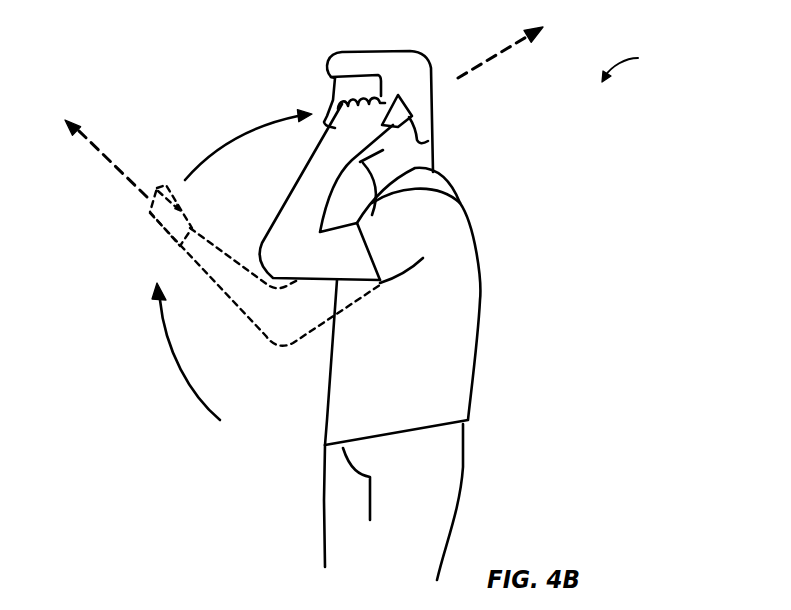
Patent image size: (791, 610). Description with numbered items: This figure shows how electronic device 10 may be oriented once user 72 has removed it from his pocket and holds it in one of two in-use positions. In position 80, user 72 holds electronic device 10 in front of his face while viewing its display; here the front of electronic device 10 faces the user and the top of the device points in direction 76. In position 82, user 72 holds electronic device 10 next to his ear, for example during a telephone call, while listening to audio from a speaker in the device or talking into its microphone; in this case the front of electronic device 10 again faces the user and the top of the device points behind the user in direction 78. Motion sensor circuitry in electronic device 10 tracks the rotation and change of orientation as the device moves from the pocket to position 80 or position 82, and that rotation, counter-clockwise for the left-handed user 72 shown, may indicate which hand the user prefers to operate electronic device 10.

The electronic device 10 is at (398, 107).
The user 72 is at (632, 66).
The direction 76 is at (108, 163).
The direction 78 is at (492, 60).
The position 80 is at (202, 240).
The position 82 is at (386, 138).